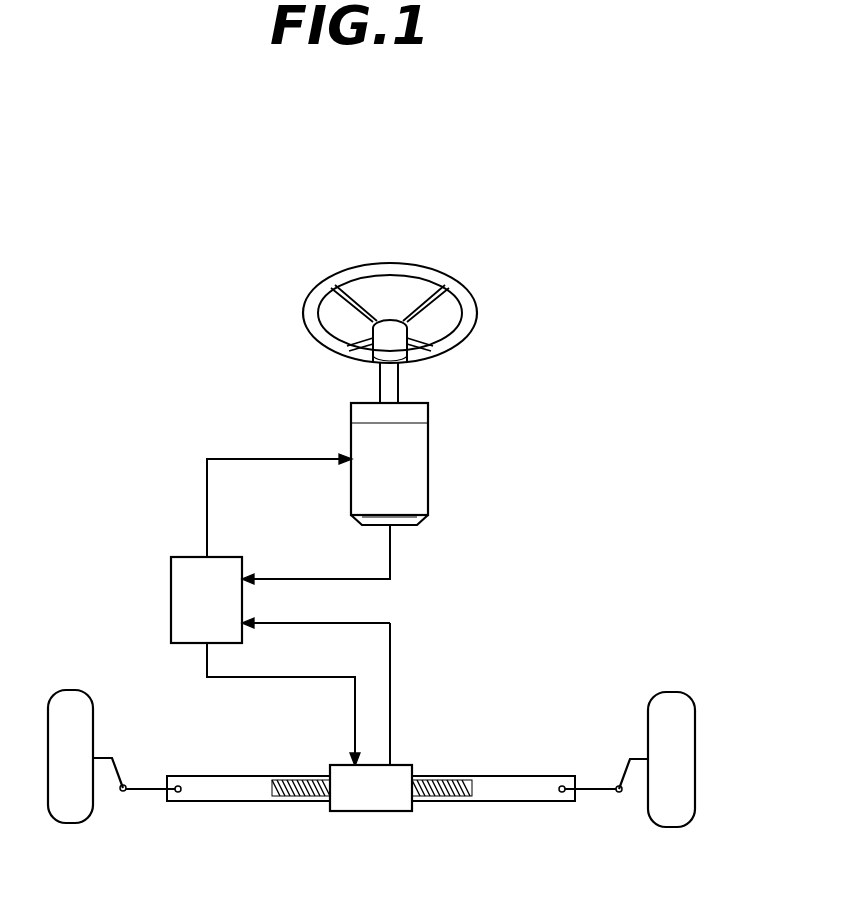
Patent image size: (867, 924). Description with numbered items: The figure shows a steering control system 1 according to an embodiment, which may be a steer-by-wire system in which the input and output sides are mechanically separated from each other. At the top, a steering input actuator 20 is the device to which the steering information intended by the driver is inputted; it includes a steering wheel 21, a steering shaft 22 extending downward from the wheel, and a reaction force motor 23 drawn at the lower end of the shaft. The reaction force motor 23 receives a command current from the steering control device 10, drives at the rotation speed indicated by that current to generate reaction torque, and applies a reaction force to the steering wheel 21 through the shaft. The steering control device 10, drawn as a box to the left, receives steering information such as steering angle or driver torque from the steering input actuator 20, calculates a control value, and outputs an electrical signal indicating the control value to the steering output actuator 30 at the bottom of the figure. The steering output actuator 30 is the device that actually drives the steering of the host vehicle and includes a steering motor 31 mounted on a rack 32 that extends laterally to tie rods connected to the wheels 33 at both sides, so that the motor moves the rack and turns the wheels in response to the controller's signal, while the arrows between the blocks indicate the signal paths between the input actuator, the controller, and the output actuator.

The steering control system 1 is at (121, 208).
The steering control device 10 is at (170, 598).
The steering input actuator 20 is at (493, 263).
The steering wheel 21 is at (391, 270).
The steering shaft 22 is at (429, 458).
The reaction force motor 23 is at (400, 527).
The steering output actuator 30 is at (410, 828).
The steering motor 31 is at (370, 812).
The rack bar 32 is at (249, 802).
The wheel 33 is at (68, 824).